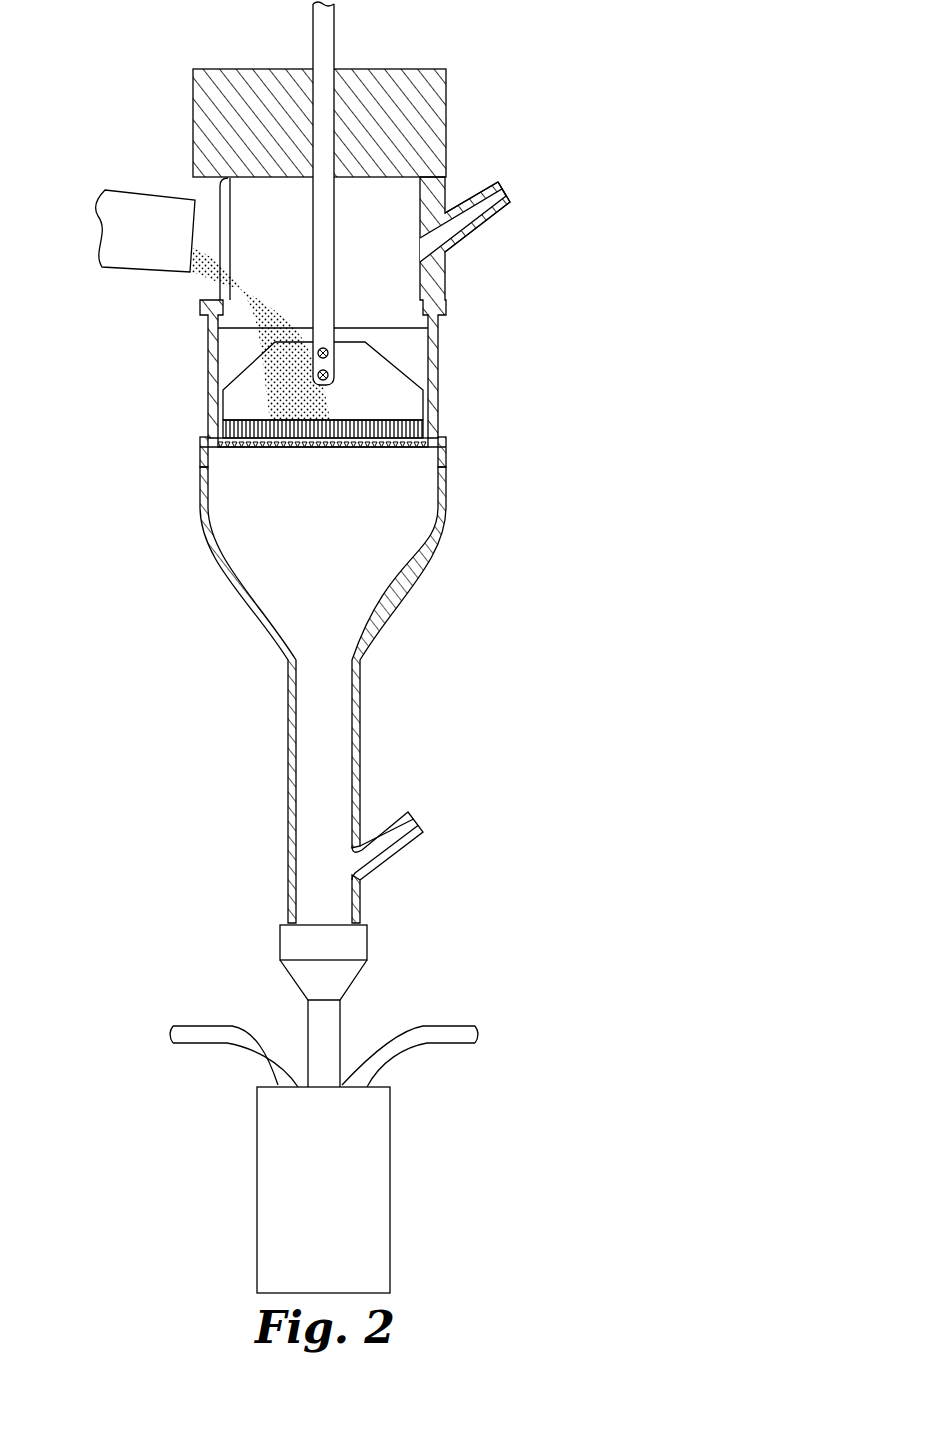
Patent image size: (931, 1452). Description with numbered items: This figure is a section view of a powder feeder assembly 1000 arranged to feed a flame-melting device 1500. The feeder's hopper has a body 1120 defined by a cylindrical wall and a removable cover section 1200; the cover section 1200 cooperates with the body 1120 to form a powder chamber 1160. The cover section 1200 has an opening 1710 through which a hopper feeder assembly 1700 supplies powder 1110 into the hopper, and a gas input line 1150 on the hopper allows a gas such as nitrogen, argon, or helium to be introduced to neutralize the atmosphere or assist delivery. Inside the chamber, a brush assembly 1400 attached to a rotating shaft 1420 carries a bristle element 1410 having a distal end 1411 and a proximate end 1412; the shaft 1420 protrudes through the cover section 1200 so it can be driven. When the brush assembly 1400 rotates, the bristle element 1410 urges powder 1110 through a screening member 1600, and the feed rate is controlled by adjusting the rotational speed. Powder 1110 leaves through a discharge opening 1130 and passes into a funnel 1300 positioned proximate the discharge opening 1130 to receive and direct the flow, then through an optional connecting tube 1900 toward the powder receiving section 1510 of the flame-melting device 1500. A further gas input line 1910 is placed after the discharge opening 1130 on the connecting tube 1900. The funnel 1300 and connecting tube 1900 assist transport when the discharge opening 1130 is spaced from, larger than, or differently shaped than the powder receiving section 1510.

The powder feeder assembly 1000 is at (463, 40).
The powder 1110 is at (207, 278).
The body 1120 is at (212, 370).
The discharge opening 1130 is at (237, 465).
The gas input line 1150 is at (498, 218).
The powder chamber 1160 is at (392, 293).
The cover section 1200 is at (444, 106).
The funnel 1300 is at (271, 694).
The brush assembly 1400 is at (400, 385).
The bristle element 1410 is at (416, 430).
The distal end 1411 is at (420, 447).
The proximate end 1412 is at (418, 417).
The rotating shaft 1420 is at (328, 43).
The flame-melting device 1500 is at (394, 1145).
The powder receiving section 1510 is at (357, 943).
The screening member 1600 is at (397, 447).
The hopper feeder assembly 1700 is at (128, 260).
The opening 1710 is at (210, 203).
The connecting tube 1900 is at (355, 735).
The gas input line 1910 is at (417, 833).